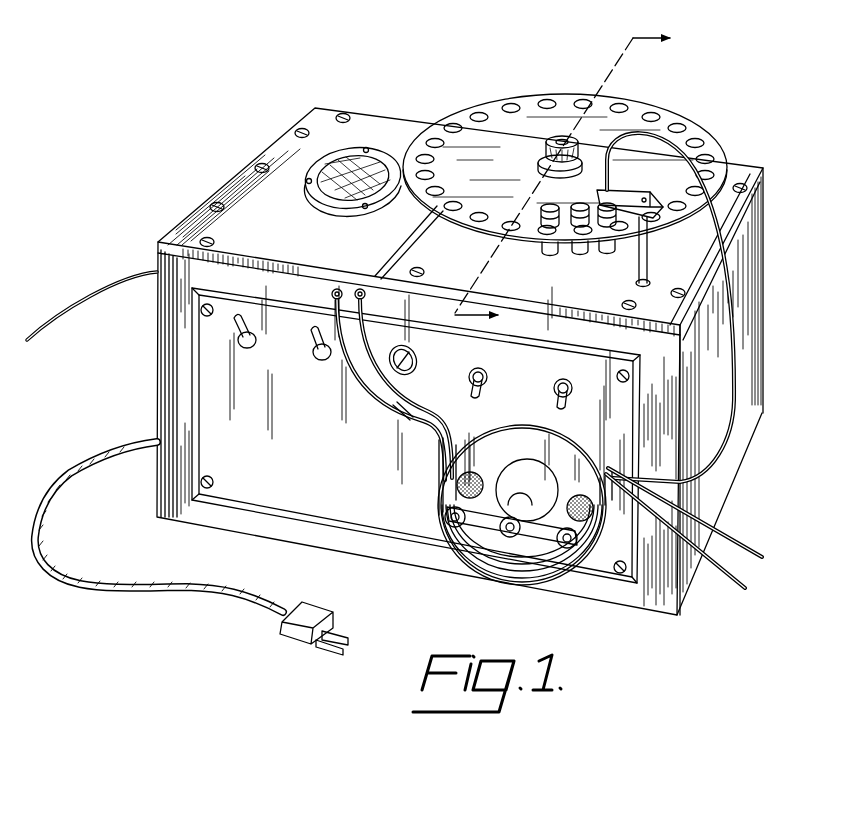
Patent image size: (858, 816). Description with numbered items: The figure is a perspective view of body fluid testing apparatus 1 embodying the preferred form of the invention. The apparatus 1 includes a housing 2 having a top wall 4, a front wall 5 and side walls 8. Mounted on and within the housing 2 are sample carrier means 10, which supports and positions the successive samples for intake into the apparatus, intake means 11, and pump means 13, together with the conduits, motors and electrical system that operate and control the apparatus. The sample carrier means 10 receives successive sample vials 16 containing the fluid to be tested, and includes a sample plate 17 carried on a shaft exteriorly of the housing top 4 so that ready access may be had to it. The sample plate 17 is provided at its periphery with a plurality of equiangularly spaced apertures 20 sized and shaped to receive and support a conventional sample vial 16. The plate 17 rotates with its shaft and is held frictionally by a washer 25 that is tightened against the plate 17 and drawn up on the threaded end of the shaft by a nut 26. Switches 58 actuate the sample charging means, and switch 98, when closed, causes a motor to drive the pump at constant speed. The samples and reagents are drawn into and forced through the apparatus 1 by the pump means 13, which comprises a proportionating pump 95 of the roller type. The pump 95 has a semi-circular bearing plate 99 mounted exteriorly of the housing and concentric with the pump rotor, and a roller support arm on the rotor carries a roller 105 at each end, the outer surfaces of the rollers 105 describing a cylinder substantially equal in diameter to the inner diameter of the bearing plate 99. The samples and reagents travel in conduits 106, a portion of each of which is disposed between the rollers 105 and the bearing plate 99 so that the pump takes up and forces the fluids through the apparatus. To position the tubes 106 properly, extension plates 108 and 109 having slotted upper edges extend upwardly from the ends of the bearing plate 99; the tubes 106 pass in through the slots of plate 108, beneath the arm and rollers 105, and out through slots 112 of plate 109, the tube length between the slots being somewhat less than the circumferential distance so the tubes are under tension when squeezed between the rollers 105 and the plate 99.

The body fluid testing apparatus 1 is at (770, 240).
The housing 2 is at (576, 179).
The top wall 4 is at (365, 125).
The front wall 5 is at (198, 372).
The side walls 8 is at (745, 356).
The sample carrier means 10 is at (695, 125).
The intake means 11 is at (655, 260).
The pump means 13 is at (468, 574).
The sample vials 16 is at (605, 253).
The sample plate 17 is at (528, 107).
The apertures 20 is at (700, 143).
The washer 25 is at (538, 170).
The nut 26 is at (548, 147).
The switches 58 is at (487, 372).
The proportionating pump 95 is at (548, 540).
The switch 98 is at (572, 395).
The bearing plate 99 is at (508, 580).
The rollers 105 is at (482, 478).
The conduits 106 is at (398, 418).
The extension plate 108 is at (603, 543).
The extension plate 109 is at (441, 497).
The slots 112 is at (455, 428).